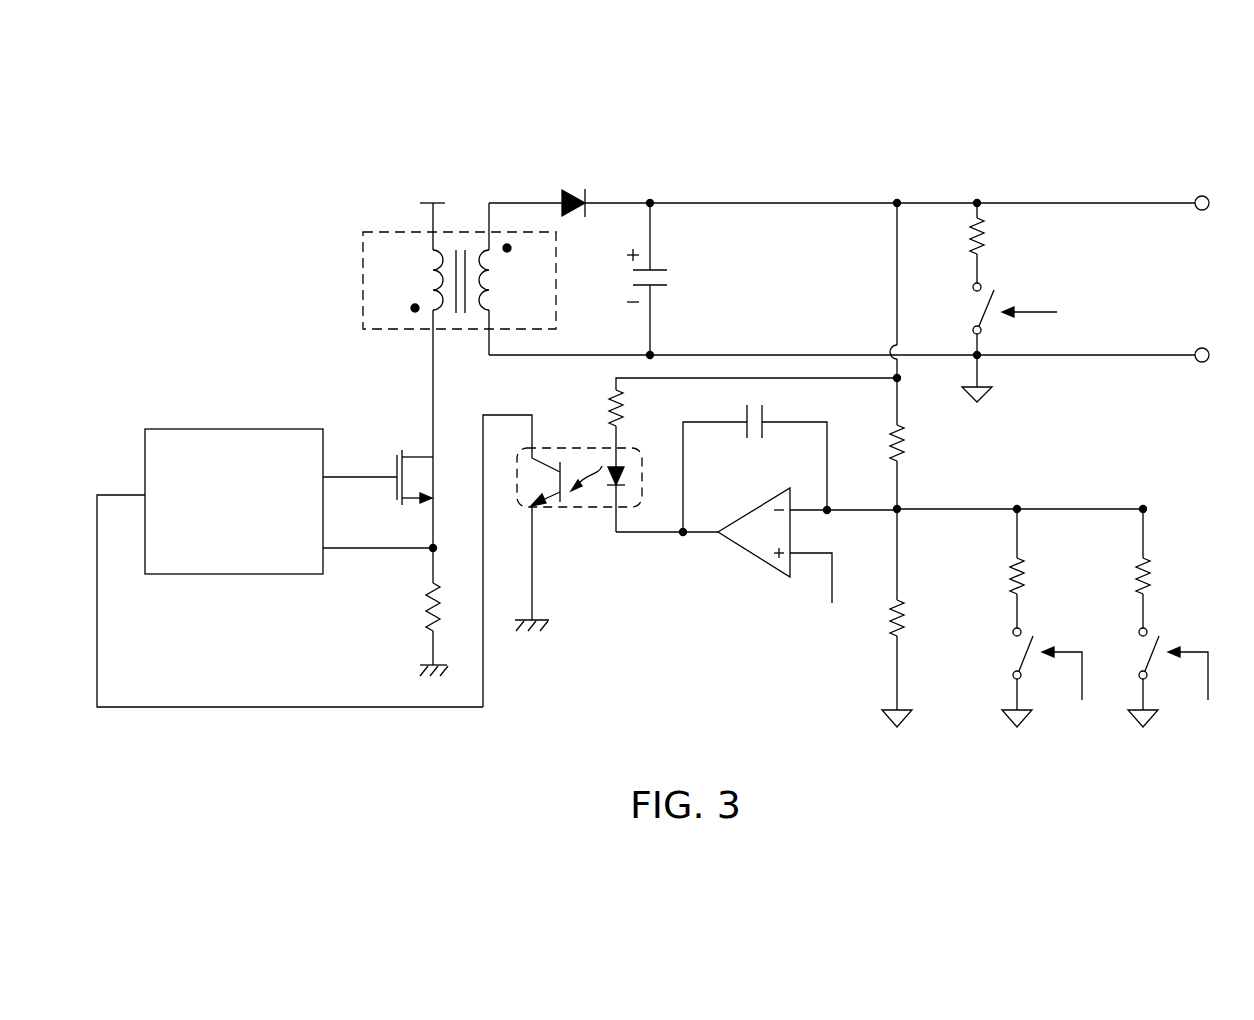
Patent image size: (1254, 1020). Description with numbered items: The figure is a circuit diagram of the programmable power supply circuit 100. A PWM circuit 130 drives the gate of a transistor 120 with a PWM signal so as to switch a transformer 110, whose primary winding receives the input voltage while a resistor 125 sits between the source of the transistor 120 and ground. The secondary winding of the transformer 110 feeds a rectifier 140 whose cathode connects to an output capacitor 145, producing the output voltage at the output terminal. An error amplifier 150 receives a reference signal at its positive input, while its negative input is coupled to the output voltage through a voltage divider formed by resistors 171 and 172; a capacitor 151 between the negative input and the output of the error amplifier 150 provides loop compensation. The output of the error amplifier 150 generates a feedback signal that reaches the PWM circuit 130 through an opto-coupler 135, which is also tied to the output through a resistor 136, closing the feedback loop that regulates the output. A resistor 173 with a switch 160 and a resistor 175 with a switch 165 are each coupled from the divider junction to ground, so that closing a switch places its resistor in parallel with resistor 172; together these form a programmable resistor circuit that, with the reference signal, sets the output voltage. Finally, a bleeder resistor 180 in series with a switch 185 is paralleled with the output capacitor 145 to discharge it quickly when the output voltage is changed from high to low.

The programmable power supply circuit 100 is at (1244, 124).
The transformer 110 is at (442, 315).
The transistor 120 is at (427, 501).
The resistor 125 is at (411, 612).
The PWM circuit 130 is at (280, 552).
The opto-coupler 135 is at (562, 561).
The resistor 136 is at (753, 422).
The rectifier 140 is at (572, 190).
The output capacitor 145 is at (664, 279).
The error amplifier 150 is at (756, 560).
The capacitor 151 is at (755, 460).
The switch 160 is at (1026, 675).
The switch 165 is at (1152, 675).
The resistor 171 is at (919, 358).
The resistor 172 is at (915, 618).
The resistor 173 is at (1022, 567).
The resistor 175 is at (1164, 568).
The resistor 180 is at (1002, 243).
The switch 185 is at (1014, 342).